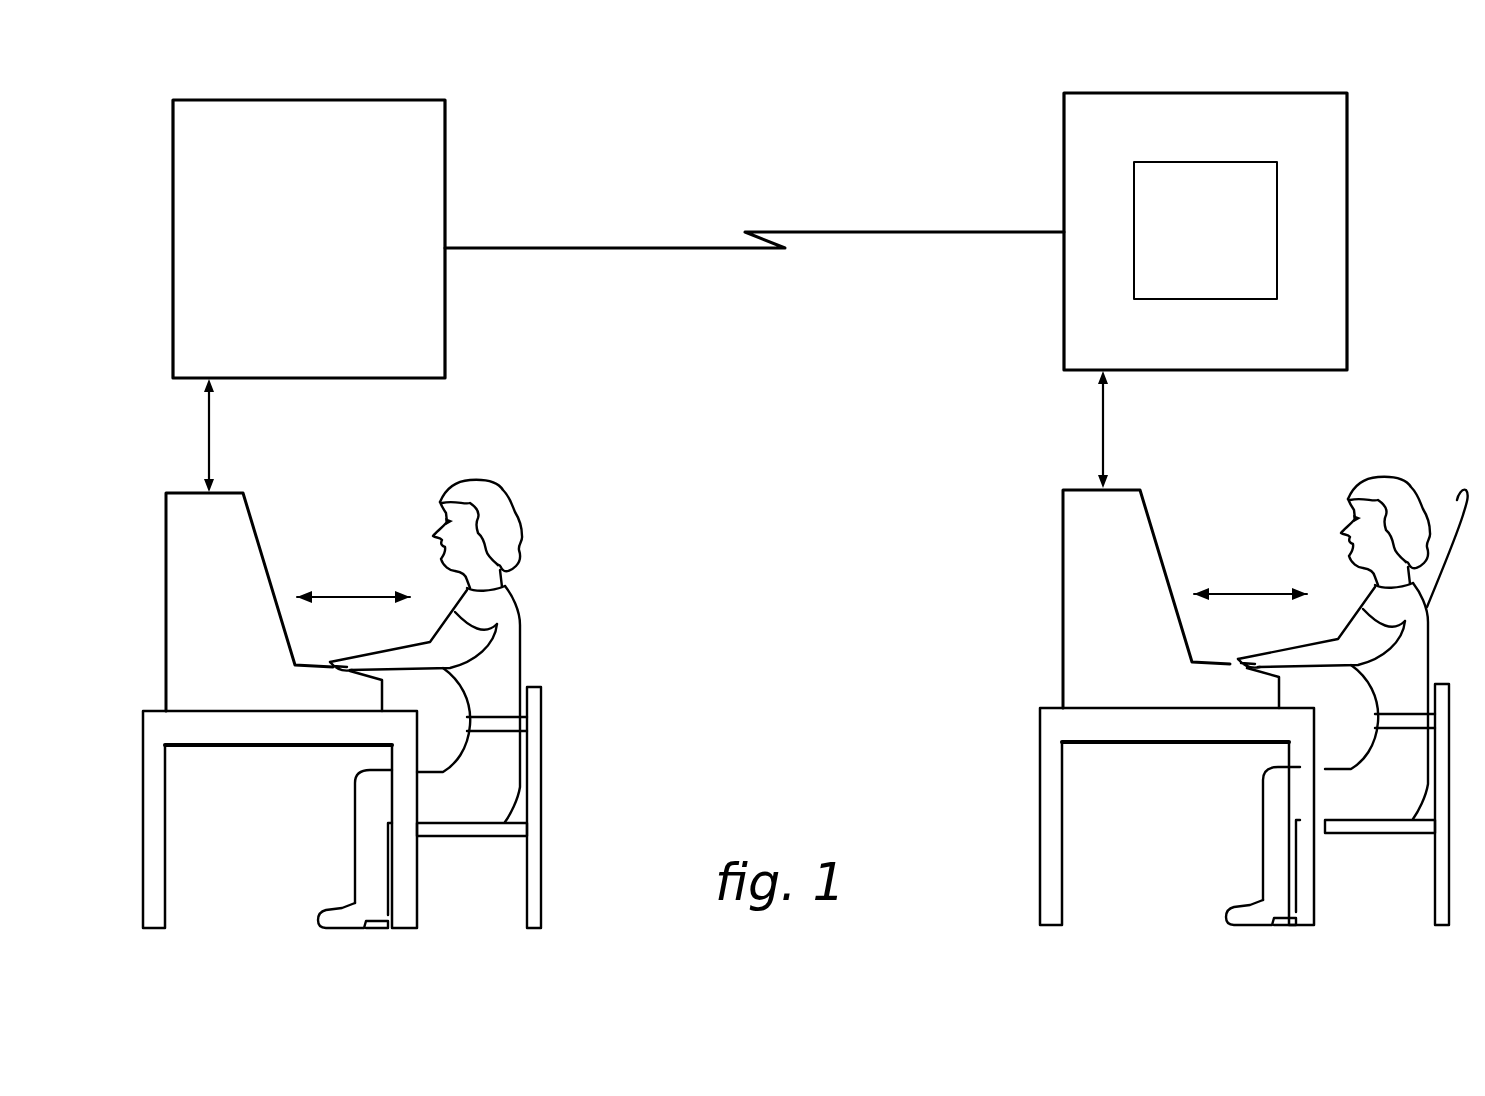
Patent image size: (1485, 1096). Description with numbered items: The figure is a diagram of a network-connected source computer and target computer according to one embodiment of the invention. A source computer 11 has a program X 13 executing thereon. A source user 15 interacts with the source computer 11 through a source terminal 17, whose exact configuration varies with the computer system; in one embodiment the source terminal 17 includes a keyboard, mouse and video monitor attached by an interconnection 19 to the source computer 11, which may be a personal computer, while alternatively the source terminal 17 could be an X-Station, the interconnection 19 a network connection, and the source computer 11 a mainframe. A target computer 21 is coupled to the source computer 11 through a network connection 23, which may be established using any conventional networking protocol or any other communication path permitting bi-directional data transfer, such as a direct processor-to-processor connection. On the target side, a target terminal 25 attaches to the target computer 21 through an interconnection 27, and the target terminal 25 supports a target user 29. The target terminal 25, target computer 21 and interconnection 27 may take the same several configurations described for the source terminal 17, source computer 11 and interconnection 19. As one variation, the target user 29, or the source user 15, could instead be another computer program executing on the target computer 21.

The source computer 11 is at (1348, 172).
The program X 13 is at (1277, 182).
The source user 15 is at (1457, 500).
The source terminal 17 is at (1063, 540).
The interconnection 19 is at (1105, 427).
The target computer 21 is at (445, 156).
The network connection 23 is at (669, 248).
The target terminal 25 is at (255, 527).
The interconnection 27 is at (212, 438).
The target user 29 is at (520, 607).